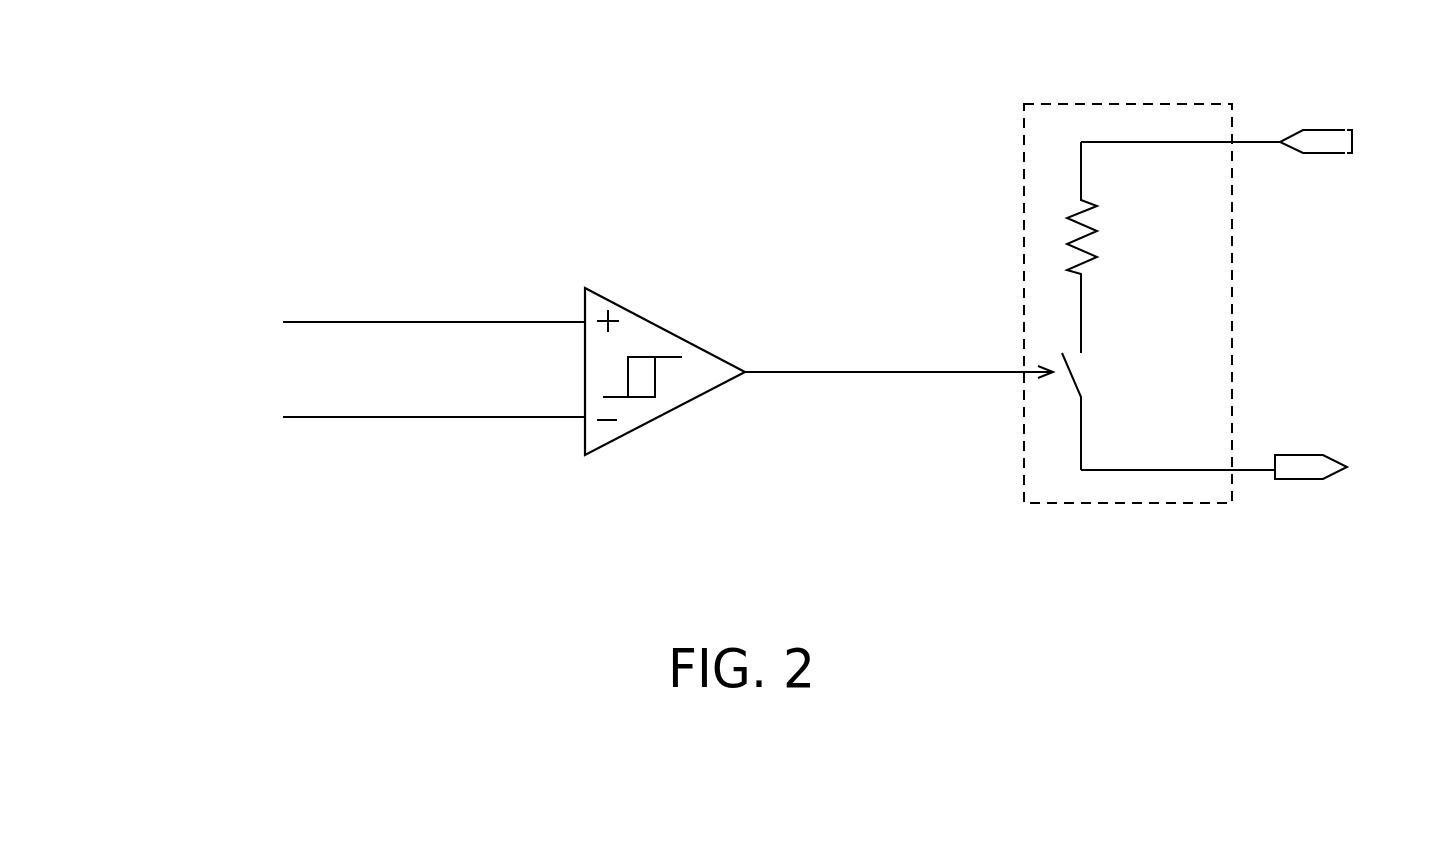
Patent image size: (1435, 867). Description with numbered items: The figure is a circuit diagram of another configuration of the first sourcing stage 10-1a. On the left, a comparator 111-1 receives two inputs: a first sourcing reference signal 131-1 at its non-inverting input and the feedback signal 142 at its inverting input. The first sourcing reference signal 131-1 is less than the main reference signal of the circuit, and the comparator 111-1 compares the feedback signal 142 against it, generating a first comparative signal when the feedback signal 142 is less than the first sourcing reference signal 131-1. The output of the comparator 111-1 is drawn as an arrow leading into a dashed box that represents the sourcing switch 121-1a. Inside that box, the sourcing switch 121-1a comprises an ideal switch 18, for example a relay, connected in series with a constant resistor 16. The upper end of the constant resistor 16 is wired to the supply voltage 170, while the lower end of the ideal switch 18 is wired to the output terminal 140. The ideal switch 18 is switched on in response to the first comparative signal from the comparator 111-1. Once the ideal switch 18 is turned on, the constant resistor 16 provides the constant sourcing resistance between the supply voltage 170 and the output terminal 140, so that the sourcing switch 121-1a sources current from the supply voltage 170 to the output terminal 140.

The first sourcing stage 10-1a is at (291, 145).
The first sourcing reference signal 131-1 is at (384, 323).
The feedback signal 142 is at (344, 417).
The comparator 111-1 is at (685, 338).
The sourcing switch 121-1a is at (1023, 165).
The constant resistor 16 is at (1093, 232).
The ideal switch 18 is at (1081, 400).
The supply voltage 170 is at (1248, 140).
The output terminal 140 is at (1248, 466).